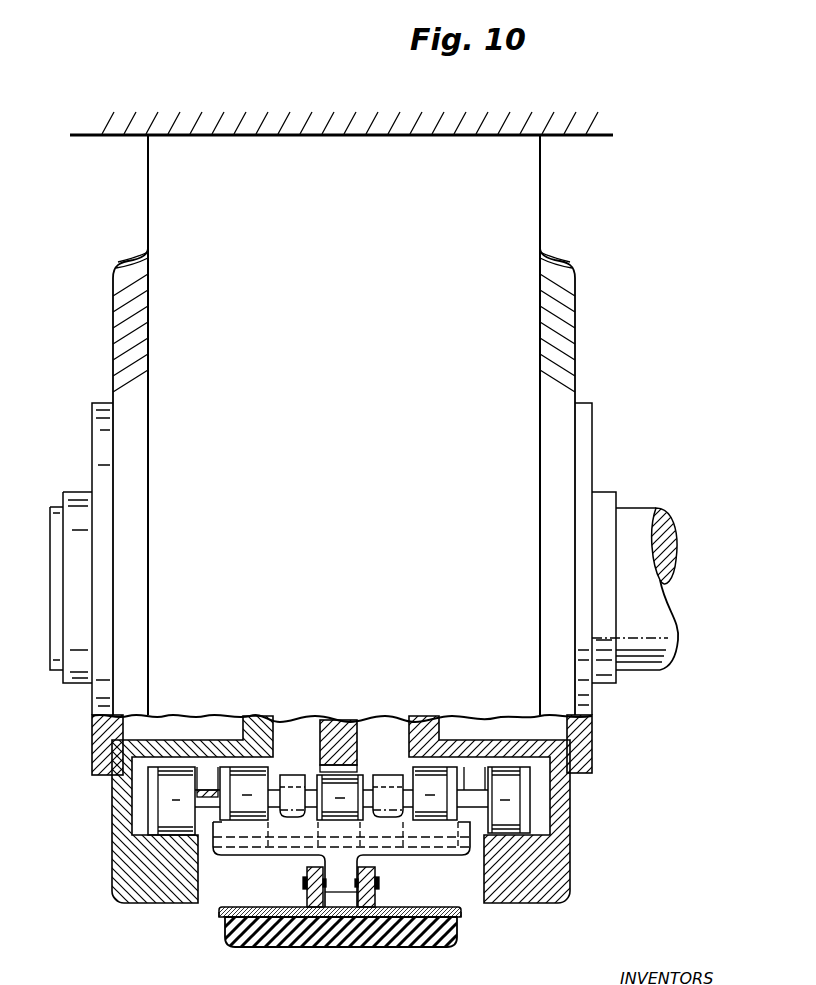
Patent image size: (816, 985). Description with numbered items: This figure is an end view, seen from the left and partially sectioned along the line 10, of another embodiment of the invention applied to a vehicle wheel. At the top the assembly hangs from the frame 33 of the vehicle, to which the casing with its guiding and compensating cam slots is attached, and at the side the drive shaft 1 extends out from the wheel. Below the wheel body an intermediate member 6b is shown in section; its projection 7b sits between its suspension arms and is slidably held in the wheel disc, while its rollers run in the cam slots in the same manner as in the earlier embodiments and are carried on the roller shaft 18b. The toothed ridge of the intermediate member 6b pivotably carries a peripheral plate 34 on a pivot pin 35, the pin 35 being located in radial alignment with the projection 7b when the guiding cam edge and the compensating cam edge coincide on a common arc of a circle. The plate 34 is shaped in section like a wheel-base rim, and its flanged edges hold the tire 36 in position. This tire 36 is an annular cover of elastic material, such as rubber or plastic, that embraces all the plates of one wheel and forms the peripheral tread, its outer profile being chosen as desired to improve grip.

The drive shaft 1 is at (632, 520).
The frame 33 is at (540, 168).
The section line 10— 10 is at (348, 778).
The projection 7b is at (360, 779).
The roller shaft 18b is at (208, 800).
The intermediate member 6b is at (295, 832).
The pivot pin 35 is at (378, 882).
The peripheral plate 34 is at (432, 907).
The tire 36 is at (360, 947).